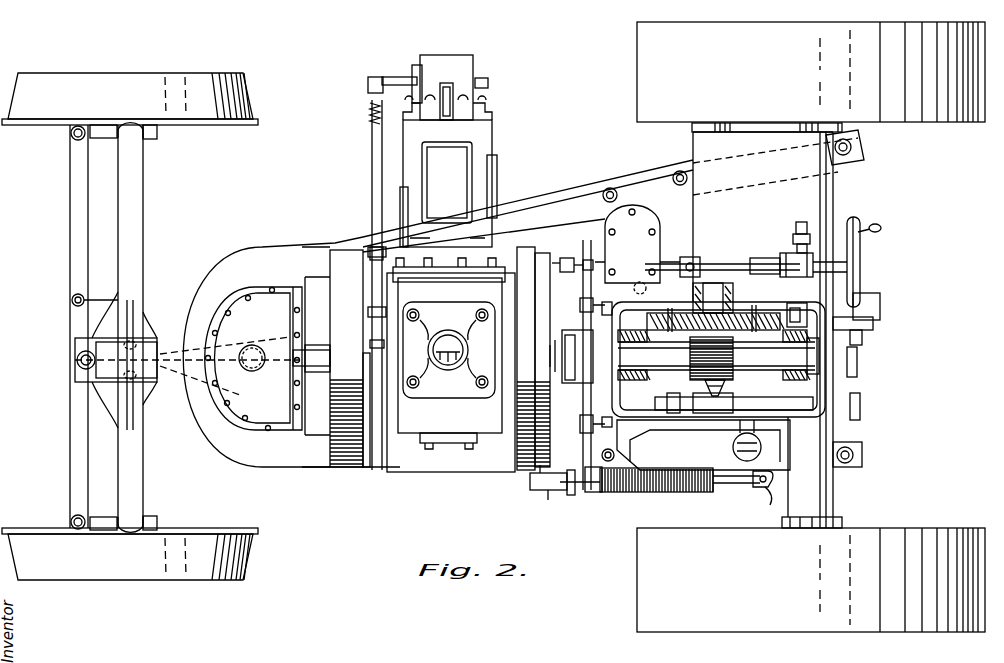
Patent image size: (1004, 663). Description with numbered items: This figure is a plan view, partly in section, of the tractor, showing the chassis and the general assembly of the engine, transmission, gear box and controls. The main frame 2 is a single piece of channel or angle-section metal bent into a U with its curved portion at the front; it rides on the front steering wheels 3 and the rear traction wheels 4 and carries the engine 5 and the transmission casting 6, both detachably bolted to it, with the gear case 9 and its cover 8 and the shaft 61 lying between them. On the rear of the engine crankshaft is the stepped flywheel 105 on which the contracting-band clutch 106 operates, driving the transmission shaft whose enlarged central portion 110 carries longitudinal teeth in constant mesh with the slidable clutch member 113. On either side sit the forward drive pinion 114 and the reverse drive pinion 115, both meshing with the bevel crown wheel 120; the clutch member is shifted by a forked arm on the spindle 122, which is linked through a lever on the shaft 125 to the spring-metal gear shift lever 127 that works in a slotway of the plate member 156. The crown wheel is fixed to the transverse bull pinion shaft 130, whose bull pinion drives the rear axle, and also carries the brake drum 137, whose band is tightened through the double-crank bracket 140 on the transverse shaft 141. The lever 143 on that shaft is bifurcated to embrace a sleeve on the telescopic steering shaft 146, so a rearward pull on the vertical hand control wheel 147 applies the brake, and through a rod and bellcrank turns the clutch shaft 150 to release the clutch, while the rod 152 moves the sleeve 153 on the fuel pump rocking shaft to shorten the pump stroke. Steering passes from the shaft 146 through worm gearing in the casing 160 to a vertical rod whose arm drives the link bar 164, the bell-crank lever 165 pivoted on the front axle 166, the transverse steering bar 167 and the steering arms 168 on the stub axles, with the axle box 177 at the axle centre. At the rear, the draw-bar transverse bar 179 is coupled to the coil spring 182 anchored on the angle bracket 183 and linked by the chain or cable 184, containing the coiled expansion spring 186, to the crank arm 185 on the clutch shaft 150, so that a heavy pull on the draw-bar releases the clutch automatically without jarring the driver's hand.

The main frame 2 is at (345, 237).
The front steering wheels 3 is at (248, 96).
The rear traction wheels 4 is at (944, 528).
The engine 5 is at (432, 157).
The transmission casting 6 is at (692, 418).
The gear case cover 8 is at (449, 340).
The gear case 9 is at (451, 365).
The shaft 61 is at (298, 364).
The flywheel 105 is at (527, 250).
The clutch 106 is at (560, 335).
The enlarged central portion 110 is at (703, 367).
The slidable clutch member 113 is at (720, 379).
The forward drive pinion 114 is at (633, 378).
The reverse drive pinion 115 is at (800, 395).
The bevel crown wheel 120 is at (650, 332).
The spindle 122 is at (790, 378).
The shaft 125 is at (826, 496).
The gear shift lever 127 is at (873, 325).
The bull pinion shaft 130 is at (707, 297).
The brake drum 137 is at (758, 318).
The double-crank bracket 140 is at (862, 340).
The transverse shaft 141 is at (803, 222).
The lever 143 is at (793, 252).
The steering shaft 146 is at (738, 263).
The hand control wheel 147 is at (852, 250).
The shaft 150 is at (593, 413).
The rod 152 is at (566, 258).
The sleeve 153 is at (370, 267).
The plate member 156 is at (868, 303).
The casing 160 is at (637, 249).
The link bar 164 is at (275, 327).
The bell-crank lever 165 is at (105, 297).
The front axle 166 is at (132, 222).
The transverse steering bar 167 is at (75, 491).
The steering arms 168 is at (103, 130).
The axle box 177 is at (110, 366).
The transverse bar 179 is at (755, 490).
The coil spring 182 is at (700, 492).
The angle bracket 183 is at (547, 490).
The chain or cable 184 is at (598, 492).
The crank arm 185 is at (570, 495).
The coiled expansion spring 186 is at (657, 492).